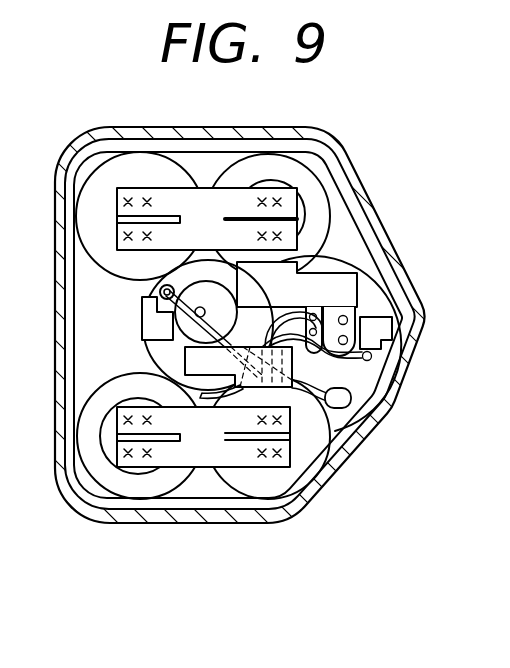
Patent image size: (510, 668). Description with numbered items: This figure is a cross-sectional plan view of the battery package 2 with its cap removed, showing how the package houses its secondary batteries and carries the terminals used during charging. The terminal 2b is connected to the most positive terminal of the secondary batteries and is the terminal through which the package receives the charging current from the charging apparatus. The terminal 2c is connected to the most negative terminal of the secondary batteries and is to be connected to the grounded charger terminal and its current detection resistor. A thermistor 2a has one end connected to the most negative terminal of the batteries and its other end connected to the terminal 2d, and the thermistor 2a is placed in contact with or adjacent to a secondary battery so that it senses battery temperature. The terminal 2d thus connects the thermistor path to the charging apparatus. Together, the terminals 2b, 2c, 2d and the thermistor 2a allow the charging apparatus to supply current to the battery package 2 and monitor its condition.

The battery package 2 is at (254, 523).
The thermistor 2a is at (364, 421).
The terminal 2b is at (165, 356).
The terminal 2c is at (338, 283).
The terminal 2d is at (150, 320).